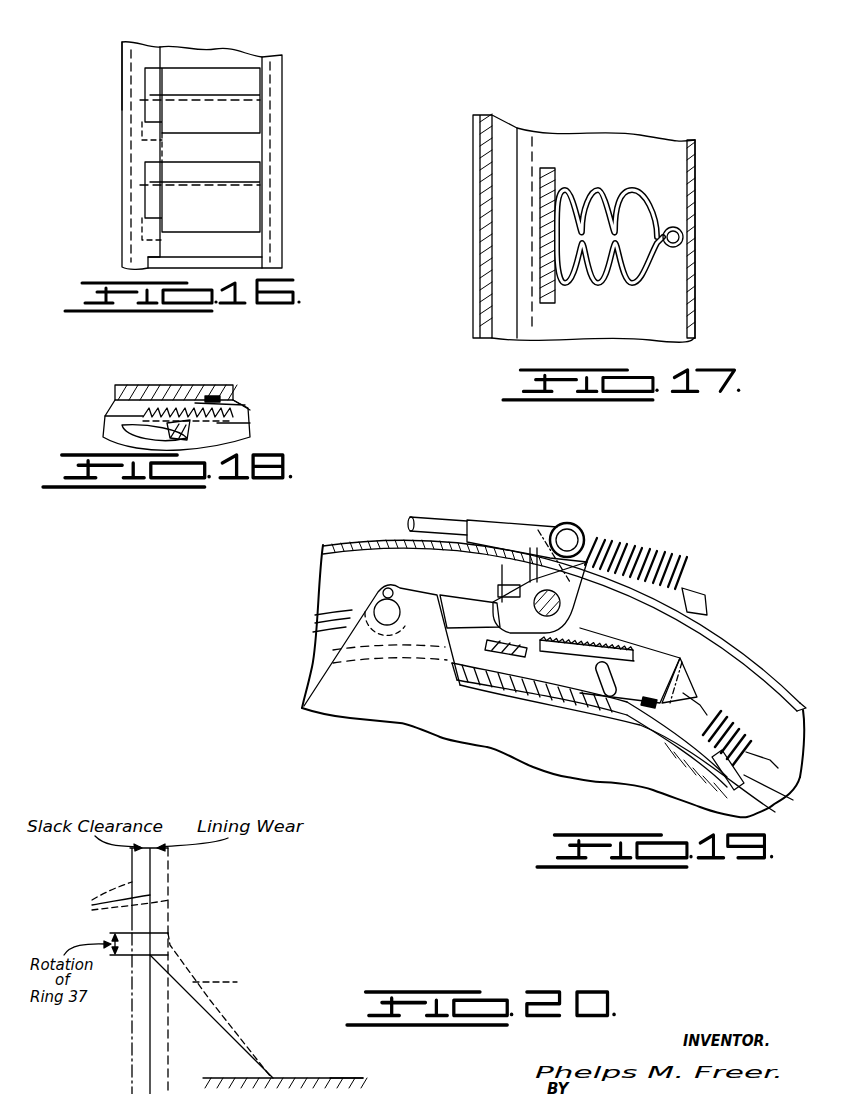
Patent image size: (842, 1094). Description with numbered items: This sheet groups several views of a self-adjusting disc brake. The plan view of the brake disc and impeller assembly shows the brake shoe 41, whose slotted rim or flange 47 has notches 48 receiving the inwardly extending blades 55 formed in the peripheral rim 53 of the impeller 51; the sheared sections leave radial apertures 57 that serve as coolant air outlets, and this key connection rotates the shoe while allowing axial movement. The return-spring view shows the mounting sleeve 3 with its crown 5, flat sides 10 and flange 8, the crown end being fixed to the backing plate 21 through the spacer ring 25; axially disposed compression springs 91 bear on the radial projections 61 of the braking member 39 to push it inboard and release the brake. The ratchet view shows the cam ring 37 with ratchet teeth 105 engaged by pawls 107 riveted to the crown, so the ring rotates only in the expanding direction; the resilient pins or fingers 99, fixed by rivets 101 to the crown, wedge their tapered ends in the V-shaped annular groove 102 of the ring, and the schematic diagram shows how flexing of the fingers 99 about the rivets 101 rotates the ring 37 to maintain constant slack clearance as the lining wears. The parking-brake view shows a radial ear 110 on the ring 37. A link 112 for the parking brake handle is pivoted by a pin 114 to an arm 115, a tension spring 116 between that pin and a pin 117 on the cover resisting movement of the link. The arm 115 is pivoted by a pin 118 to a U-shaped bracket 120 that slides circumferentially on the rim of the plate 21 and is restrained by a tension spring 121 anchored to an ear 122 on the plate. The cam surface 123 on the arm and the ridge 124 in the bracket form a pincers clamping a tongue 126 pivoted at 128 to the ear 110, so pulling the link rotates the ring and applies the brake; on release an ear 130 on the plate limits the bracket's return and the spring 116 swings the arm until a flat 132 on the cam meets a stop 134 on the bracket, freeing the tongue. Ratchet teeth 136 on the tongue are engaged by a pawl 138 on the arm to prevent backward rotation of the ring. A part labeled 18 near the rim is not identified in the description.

In FIG. 17, the mounting sleeve 3 is at (656, 141).
In FIG. 18, the mounting sleeve 3 is at (137, 385).
In FIG. 20, the mounting sleeve 3 is at (341, 1078).
In FIG. 18, the crown 5 is at (210, 393).
In FIG. 17, the flange 8 is at (697, 192).
In FIG. 17, the flat sides 10 is at (603, 139).
In FIG. 18, the flat sides 10 is at (127, 400).
In FIG. 19, the rim 18 is at (732, 644).
In FIG. 17, the backing plate 21 is at (480, 247).
In FIG. 19, the backing plate 21 is at (322, 657).
In FIG. 17, the spacer ring 25 is at (505, 332).
In FIG. 18, the cam ring 37 is at (255, 422).
In FIG. 19, the cam ring 37 is at (411, 712).
In FIG. 20, the cam ring 37 is at (114, 898).
In FIG. 17, the braking member 39 is at (547, 168).
In FIG. 16, the brake shoe 41 is at (118, 50).
In FIG. 16, the slotted flange 47 is at (149, 46).
In FIG. 16, the notches 48 is at (160, 127).
In FIG. 16, the impeller 51 is at (284, 172).
In FIG. 16, the peripheral rim 53 is at (227, 50).
In FIG. 16, the blades 55 is at (240, 92).
In FIG. 16, the radial apertures 57 is at (228, 162).
In FIG. 17, the radial projections 61 is at (557, 192).
In FIG. 17, the compression springs 91 is at (600, 284).
In FIG. 18, the resilient pins 99 is at (120, 432).
In FIG. 20, the resilient pins 99 is at (198, 1003).
In FIG. 20, the rivets 101 is at (275, 1078).
In FIG. 18, the annular groove 102 is at (250, 432).
In FIG. 18, the ratchet teeth 105 is at (241, 402).
In FIG. 18, the pawls 107 is at (165, 405).
In FIG. 19, the radial ear 110 is at (320, 617).
In FIG. 19, the link 112 is at (507, 520).
In FIG. 19, the pin 114 is at (577, 527).
In FIG. 19, the arm 115 is at (530, 573).
In FIG. 19, the tension spring 116 is at (643, 549).
In FIG. 19, the pin 117 is at (703, 593).
In FIG. 19, the pin 118 is at (562, 605).
In FIG. 19, the U-shaped bracket 120 is at (612, 641).
In FIG. 19, the tension spring 121 is at (745, 722).
In FIG. 19, the ear 122 is at (788, 746).
In FIG. 19, the cam surface 123 is at (510, 617).
In FIG. 19, the ridge 124 is at (540, 697).
In FIG. 19, the tongue 126 is at (647, 664).
In FIG. 19, the pivot 128 is at (393, 607).
In FIG. 19, the ear 130 is at (616, 680).
In FIG. 19, the flat 132 is at (505, 593).
In FIG. 19, the stop 134 is at (502, 566).
In FIG. 19, the ratchet teeth 136 is at (530, 650).
In FIG. 19, the pawl 138 is at (583, 641).